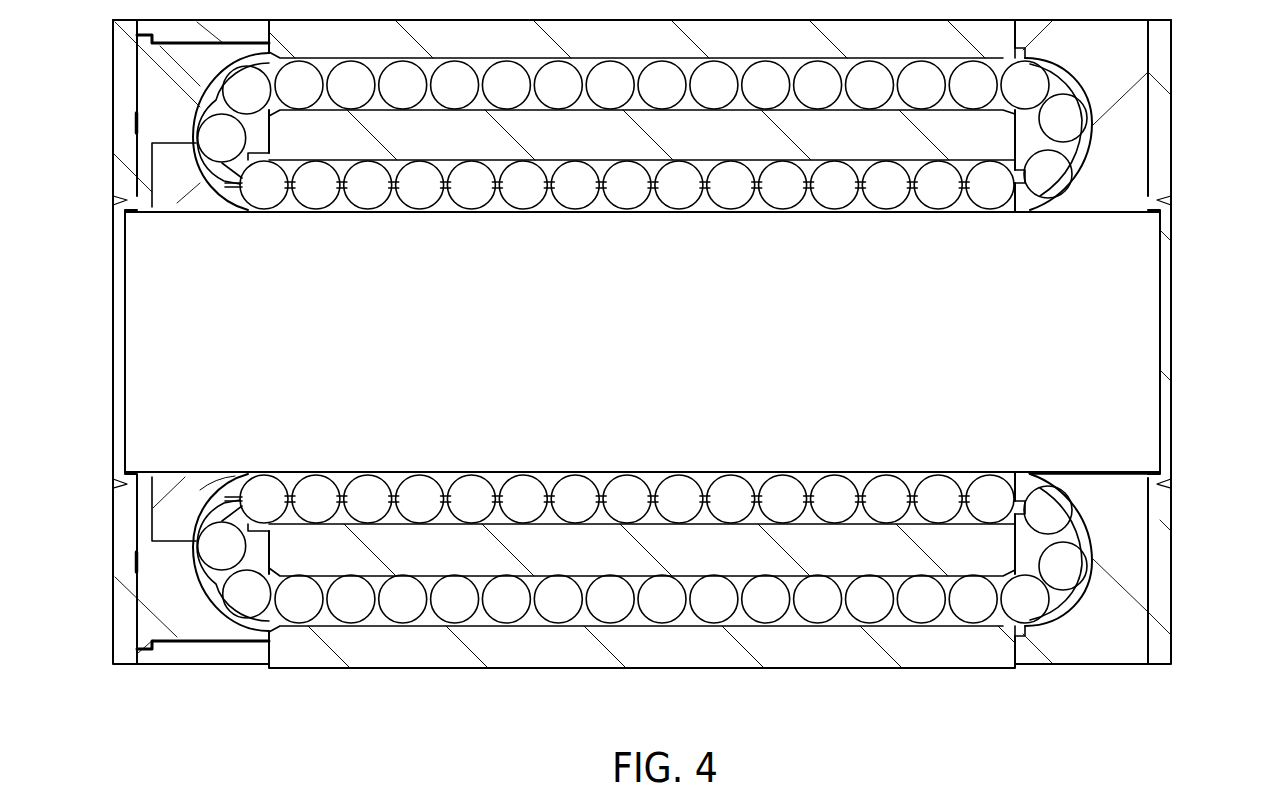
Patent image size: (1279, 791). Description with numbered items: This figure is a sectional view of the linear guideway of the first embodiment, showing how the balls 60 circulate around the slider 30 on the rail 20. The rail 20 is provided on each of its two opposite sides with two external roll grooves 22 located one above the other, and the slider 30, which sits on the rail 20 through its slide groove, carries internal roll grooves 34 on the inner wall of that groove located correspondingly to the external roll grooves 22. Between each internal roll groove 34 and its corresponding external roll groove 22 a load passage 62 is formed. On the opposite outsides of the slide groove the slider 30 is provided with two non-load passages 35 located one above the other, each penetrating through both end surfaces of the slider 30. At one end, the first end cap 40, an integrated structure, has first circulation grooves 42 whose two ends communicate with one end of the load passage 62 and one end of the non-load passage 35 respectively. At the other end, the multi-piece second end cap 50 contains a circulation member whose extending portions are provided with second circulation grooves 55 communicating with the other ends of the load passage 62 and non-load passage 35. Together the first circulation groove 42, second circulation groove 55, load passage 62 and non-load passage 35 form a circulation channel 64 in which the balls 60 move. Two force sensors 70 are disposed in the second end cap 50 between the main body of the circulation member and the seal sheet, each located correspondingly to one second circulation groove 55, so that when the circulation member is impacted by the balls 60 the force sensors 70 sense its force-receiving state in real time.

The rail 20 is at (1140, 268).
The external roll groove 22 is at (968, 471).
The slider 30 is at (382, 674).
The internal roll groove 34 is at (1040, 472).
The non-load passage 35 is at (840, 620).
The first end cap 40 is at (1163, 676).
The first circulation groove 42 is at (1122, 544).
The second end cap 50 is at (113, 674).
The second circulation groove 55 is at (207, 603).
The ball 60 is at (757, 608).
The load passage 62 is at (1228, 362).
The circulation channel 64 is at (203, 493).
The force sensor 70 is at (135, 561).